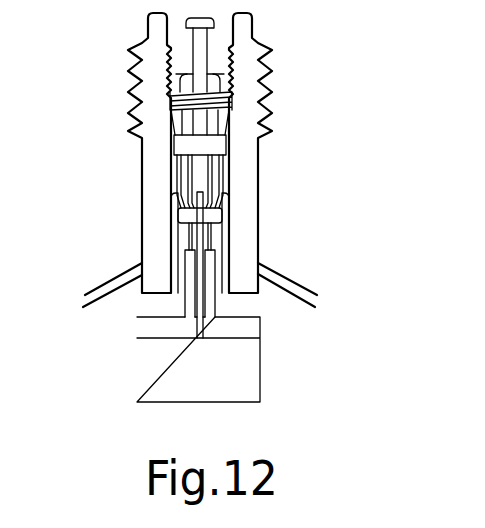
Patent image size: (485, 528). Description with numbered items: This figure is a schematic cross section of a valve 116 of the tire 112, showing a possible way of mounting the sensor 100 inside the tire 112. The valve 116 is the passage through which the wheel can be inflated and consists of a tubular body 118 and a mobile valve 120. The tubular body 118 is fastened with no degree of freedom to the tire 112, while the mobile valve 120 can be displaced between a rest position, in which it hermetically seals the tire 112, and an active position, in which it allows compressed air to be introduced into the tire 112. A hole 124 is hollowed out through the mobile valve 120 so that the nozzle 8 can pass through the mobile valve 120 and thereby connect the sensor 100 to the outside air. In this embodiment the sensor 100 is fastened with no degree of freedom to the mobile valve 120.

The nozzle 8 is at (186, 247).
The sensor 100 is at (266, 330).
The tire 112 is at (292, 288).
The valve 116 is at (102, 10).
The tubular body 118 is at (245, 149).
The mobile valve 120 is at (223, 218).
The hole 124 is at (178, 217).